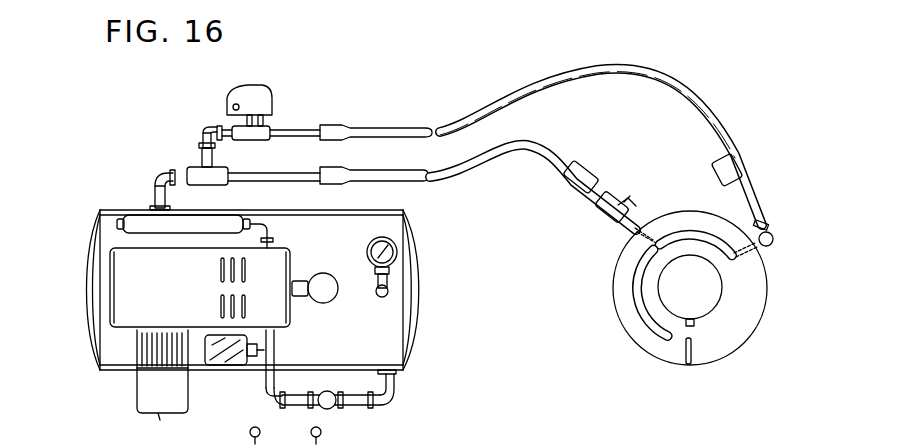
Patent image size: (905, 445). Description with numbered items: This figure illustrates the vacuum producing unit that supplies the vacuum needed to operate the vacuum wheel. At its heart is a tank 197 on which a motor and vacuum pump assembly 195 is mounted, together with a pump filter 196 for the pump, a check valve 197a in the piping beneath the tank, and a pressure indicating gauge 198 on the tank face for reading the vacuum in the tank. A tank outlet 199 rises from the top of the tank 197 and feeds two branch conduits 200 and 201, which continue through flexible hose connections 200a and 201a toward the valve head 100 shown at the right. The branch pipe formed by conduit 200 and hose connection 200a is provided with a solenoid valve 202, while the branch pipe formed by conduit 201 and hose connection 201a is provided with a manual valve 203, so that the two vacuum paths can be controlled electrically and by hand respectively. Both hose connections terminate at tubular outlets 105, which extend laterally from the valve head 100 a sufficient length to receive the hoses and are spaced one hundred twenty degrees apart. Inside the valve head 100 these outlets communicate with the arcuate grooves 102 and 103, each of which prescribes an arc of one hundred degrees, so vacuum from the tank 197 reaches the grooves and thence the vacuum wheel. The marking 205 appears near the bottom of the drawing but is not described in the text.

The valve head 100 is at (748, 328).
The arcuate groove 102 is at (633, 303).
The arcuate groove 103 is at (716, 195).
The tubular outlets 105 is at (625, 232).
The motor and vacuum pump assembly 195 is at (135, 285).
The pump filter 196 is at (225, 367).
The tank 197 is at (392, 318).
The check valve 197a is at (336, 404).
The pressure indicating gauge 198 is at (395, 251).
The tank outlet 199 is at (158, 180).
The branch conduit 200 is at (289, 130).
The hose connection 200a is at (632, 76).
The branch conduit 201 is at (258, 176).
The hose connection 201a is at (563, 162).
The solenoid valve 202 is at (262, 100).
The manual valve 203 is at (627, 199).
The marker 205 is at (285, 436).